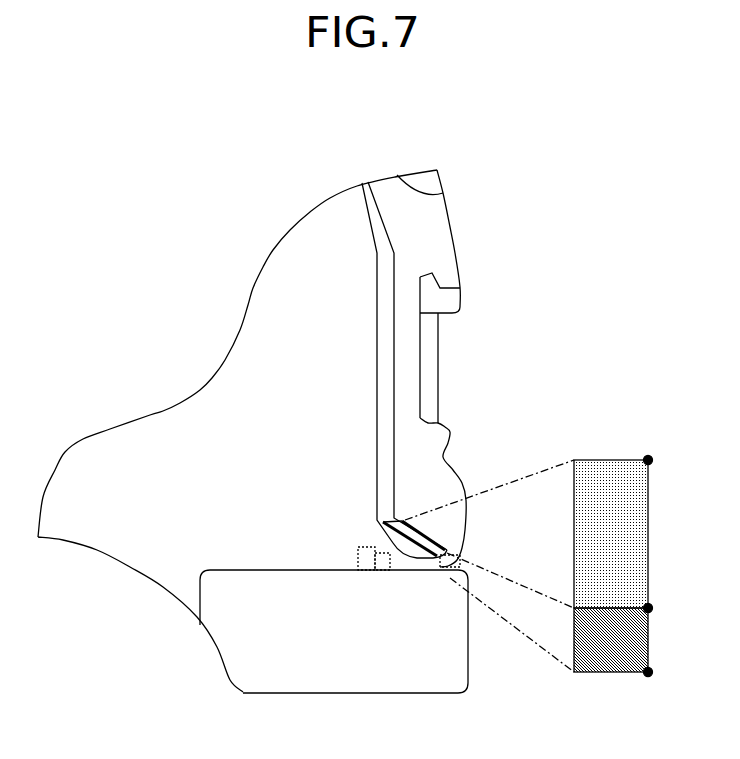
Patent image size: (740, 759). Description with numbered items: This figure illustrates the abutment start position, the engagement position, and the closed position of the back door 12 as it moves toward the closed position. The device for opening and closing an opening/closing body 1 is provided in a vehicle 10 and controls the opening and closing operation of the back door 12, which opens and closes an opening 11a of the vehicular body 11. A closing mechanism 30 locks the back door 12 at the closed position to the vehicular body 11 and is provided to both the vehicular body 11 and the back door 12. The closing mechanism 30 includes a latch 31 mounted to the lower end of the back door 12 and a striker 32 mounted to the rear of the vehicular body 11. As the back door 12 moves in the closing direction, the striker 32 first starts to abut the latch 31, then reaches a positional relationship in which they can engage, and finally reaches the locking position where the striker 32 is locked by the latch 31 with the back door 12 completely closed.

The device for opening and closing an opening/closing body 1 is at (354, 484).
The vehicle 10 is at (125, 379).
The vehicular body 11 is at (150, 558).
The opening 11a is at (383, 372).
The back door 12 is at (460, 473).
The closing mechanism 30 is at (376, 528).
The latch 31 is at (374, 522).
The striker 32 is at (393, 548).